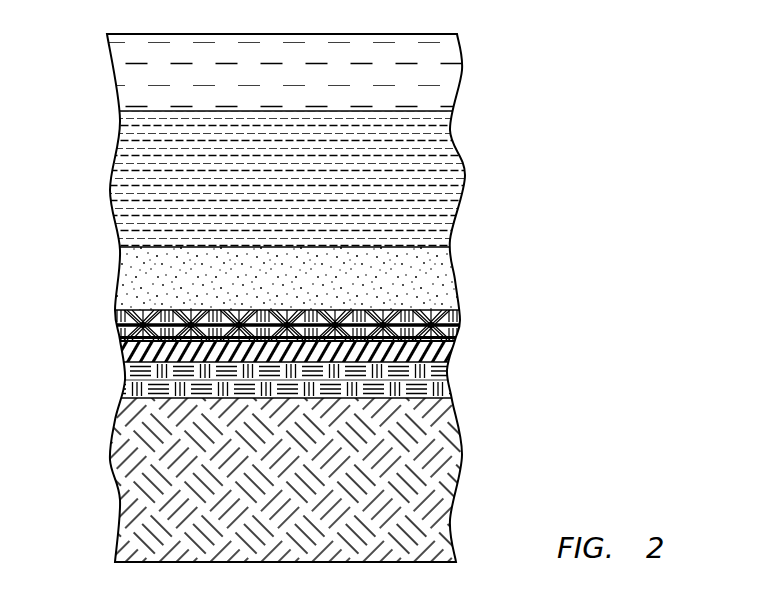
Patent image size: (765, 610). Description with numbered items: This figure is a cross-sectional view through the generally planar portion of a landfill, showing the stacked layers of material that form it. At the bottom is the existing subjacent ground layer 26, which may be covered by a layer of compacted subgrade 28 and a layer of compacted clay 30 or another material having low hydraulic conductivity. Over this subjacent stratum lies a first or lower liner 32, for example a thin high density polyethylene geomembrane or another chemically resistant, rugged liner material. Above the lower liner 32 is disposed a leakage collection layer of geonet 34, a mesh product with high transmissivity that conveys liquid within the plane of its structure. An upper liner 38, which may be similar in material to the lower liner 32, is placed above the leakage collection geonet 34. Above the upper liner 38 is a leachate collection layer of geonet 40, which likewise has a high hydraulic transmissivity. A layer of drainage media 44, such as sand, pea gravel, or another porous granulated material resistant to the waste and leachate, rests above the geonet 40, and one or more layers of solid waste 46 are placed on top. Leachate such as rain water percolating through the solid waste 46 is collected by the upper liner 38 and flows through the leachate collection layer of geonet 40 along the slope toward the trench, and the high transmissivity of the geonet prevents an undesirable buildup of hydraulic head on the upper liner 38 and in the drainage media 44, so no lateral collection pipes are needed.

The subjacent ground layer 26 is at (110, 456).
The layer of compacted subgrade 28 is at (125, 390).
The layer of compacted clay 30 is at (115, 352).
The lower liner 32 is at (458, 342).
The leakage collection layer of geonet 34 is at (460, 334).
The upper liner 38 is at (460, 326).
The leachate collection layer of geonet 40 is at (460, 318).
The drainage media 44 is at (452, 282).
The solid waste 46 is at (450, 137).